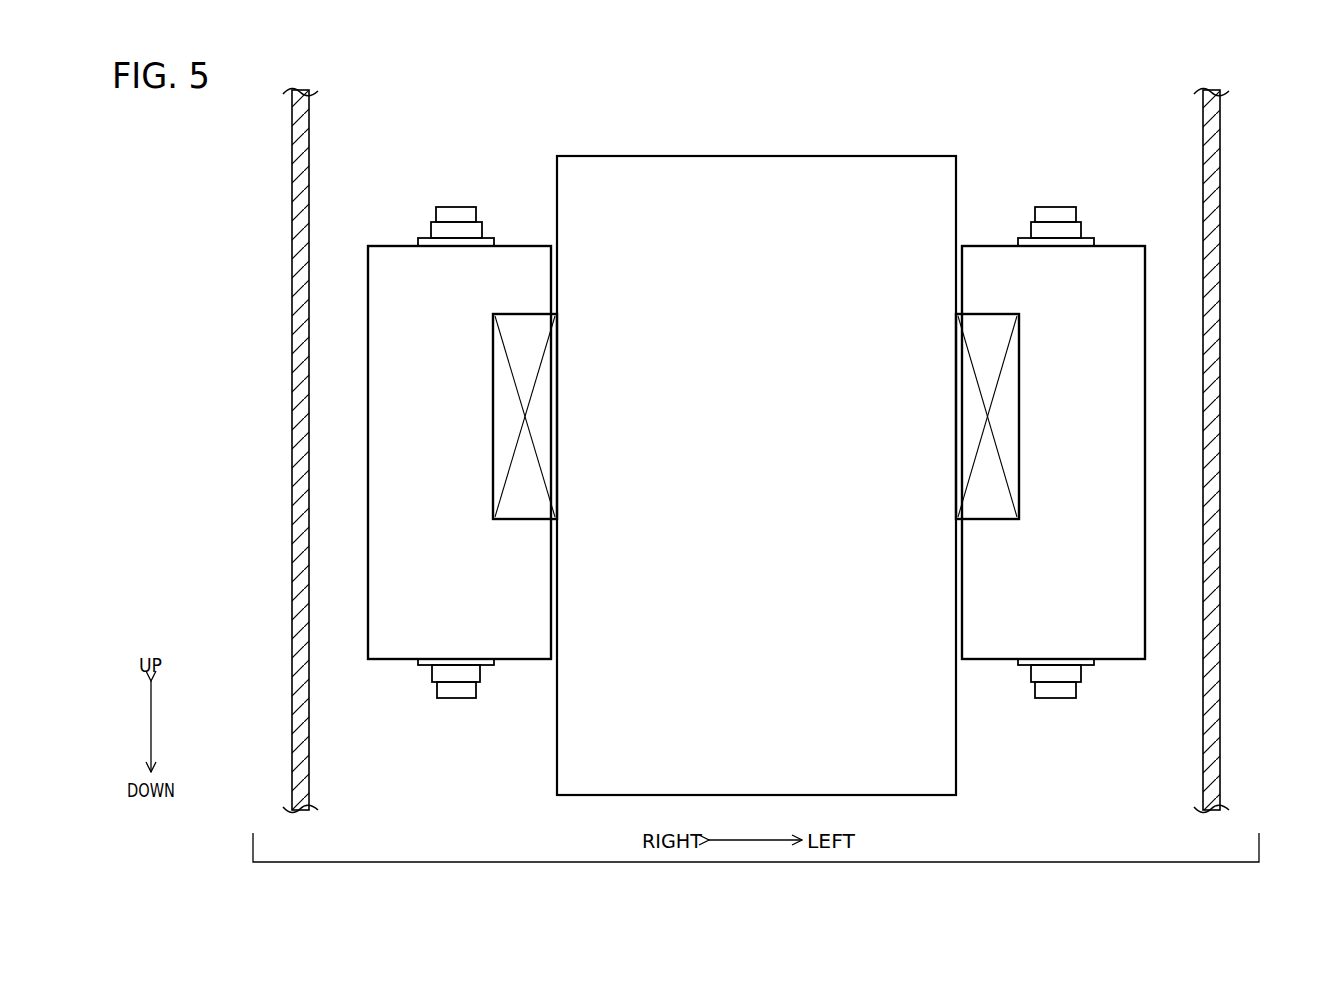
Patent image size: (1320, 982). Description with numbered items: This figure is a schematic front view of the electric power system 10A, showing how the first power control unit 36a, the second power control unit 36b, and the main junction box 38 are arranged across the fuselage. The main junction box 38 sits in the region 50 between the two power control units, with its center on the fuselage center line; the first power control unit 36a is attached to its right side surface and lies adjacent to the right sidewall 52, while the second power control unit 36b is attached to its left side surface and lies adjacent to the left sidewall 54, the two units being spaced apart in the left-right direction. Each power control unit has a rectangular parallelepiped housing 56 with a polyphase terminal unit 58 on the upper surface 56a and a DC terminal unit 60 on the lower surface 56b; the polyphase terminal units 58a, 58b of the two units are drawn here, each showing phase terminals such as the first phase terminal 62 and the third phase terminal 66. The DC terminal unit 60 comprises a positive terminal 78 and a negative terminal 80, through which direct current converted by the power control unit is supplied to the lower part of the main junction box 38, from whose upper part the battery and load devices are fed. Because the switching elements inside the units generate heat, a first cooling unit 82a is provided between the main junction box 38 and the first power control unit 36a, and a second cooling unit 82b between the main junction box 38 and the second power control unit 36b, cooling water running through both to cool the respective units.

The electric power system 10A is at (422, 84).
The first power control unit 36a is at (365, 291).
The second power control unit 36b is at (1148, 290).
The main junction box 38 is at (655, 167).
The region 50 is at (795, 136).
The right sidewall 52 is at (292, 393).
The left sidewall 54 is at (1217, 395).
The housing 56 is at (379, 378).
The upper surface 56a is at (395, 245).
The lower surface 56b is at (385, 660).
The polyphase terminal unit 58 is at (755, 177).
The first electrode terminal 58a is at (457, 177).
The second electrode terminal 58b is at (1033, 177).
The DC terminal unit 60 is at (754, 718).
The first phase terminal 62 is at (1037, 133).
The third phase terminal 66 is at (477, 133).
The positive terminal 78 is at (457, 694).
The negative terminal 80 is at (1093, 695).
The first cooling unit 82a is at (545, 405).
The second cooling unit 82b is at (967, 405).